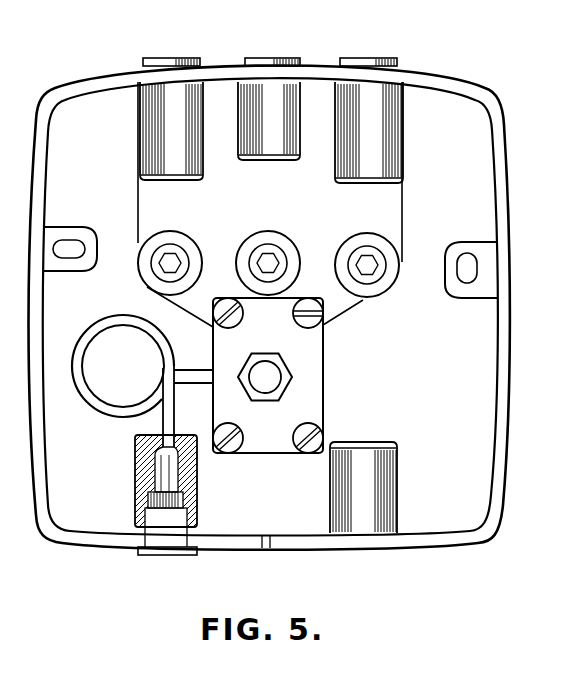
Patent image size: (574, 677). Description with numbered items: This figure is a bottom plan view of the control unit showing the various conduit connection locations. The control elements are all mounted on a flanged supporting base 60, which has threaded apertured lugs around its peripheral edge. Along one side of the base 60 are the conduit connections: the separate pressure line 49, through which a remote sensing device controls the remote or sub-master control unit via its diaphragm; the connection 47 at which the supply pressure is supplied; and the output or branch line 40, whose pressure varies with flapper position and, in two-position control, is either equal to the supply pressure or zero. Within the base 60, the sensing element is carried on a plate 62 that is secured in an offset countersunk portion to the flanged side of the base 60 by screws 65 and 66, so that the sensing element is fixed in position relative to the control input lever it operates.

The flanged supporting base 60 is at (491, 397).
The separate pressure line 49 is at (177, 36).
The supply pressure connection 47 is at (277, 58).
The output or branch line 40 is at (378, 58).
The screw 65 is at (309, 326).
The screw 66 is at (218, 308).
The plate 62 is at (310, 393).